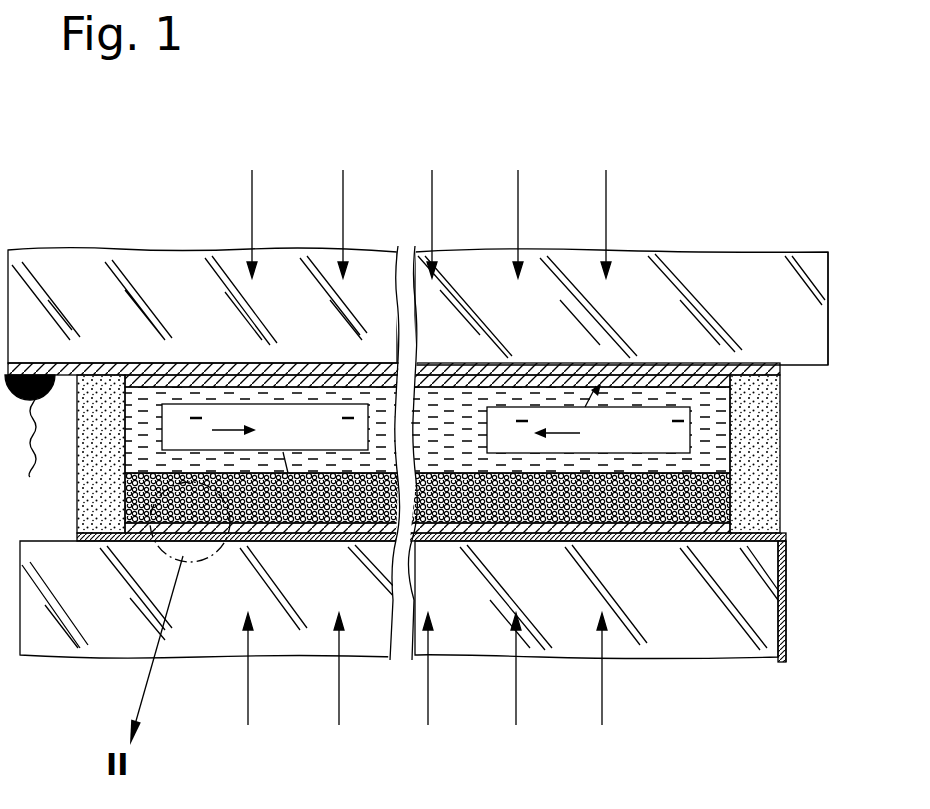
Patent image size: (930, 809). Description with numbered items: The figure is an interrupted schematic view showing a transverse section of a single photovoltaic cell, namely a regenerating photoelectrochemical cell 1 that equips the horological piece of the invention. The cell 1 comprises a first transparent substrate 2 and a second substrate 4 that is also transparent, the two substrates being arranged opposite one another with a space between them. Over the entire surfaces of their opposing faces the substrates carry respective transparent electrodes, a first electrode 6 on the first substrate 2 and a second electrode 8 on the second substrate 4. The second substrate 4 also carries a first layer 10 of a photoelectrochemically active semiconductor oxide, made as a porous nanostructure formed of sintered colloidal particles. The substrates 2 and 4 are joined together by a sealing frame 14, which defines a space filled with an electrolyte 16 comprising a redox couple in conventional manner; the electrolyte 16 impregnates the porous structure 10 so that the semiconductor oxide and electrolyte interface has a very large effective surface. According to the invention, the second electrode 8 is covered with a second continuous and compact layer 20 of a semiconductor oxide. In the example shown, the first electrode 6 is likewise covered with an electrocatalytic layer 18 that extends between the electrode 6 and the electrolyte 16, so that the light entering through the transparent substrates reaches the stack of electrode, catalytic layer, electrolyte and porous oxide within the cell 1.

The regenerating photoelectrochemical cell 1 is at (842, 391).
The first transparent substrate 2 is at (57, 265).
The second substrate 4 is at (45, 625).
The first transparent electrode 6 is at (100, 362).
The second transparent electrode 8 is at (785, 556).
The first layer of photoelectrochemically active semiconductor oxide 10 is at (725, 492).
The sealing frame 14 is at (100, 484).
The electrolyte 16 is at (712, 416).
The electrocatalytic layer 18 is at (183, 376).
The second continuous and compact layer of semiconductor oxide 20 is at (652, 534).